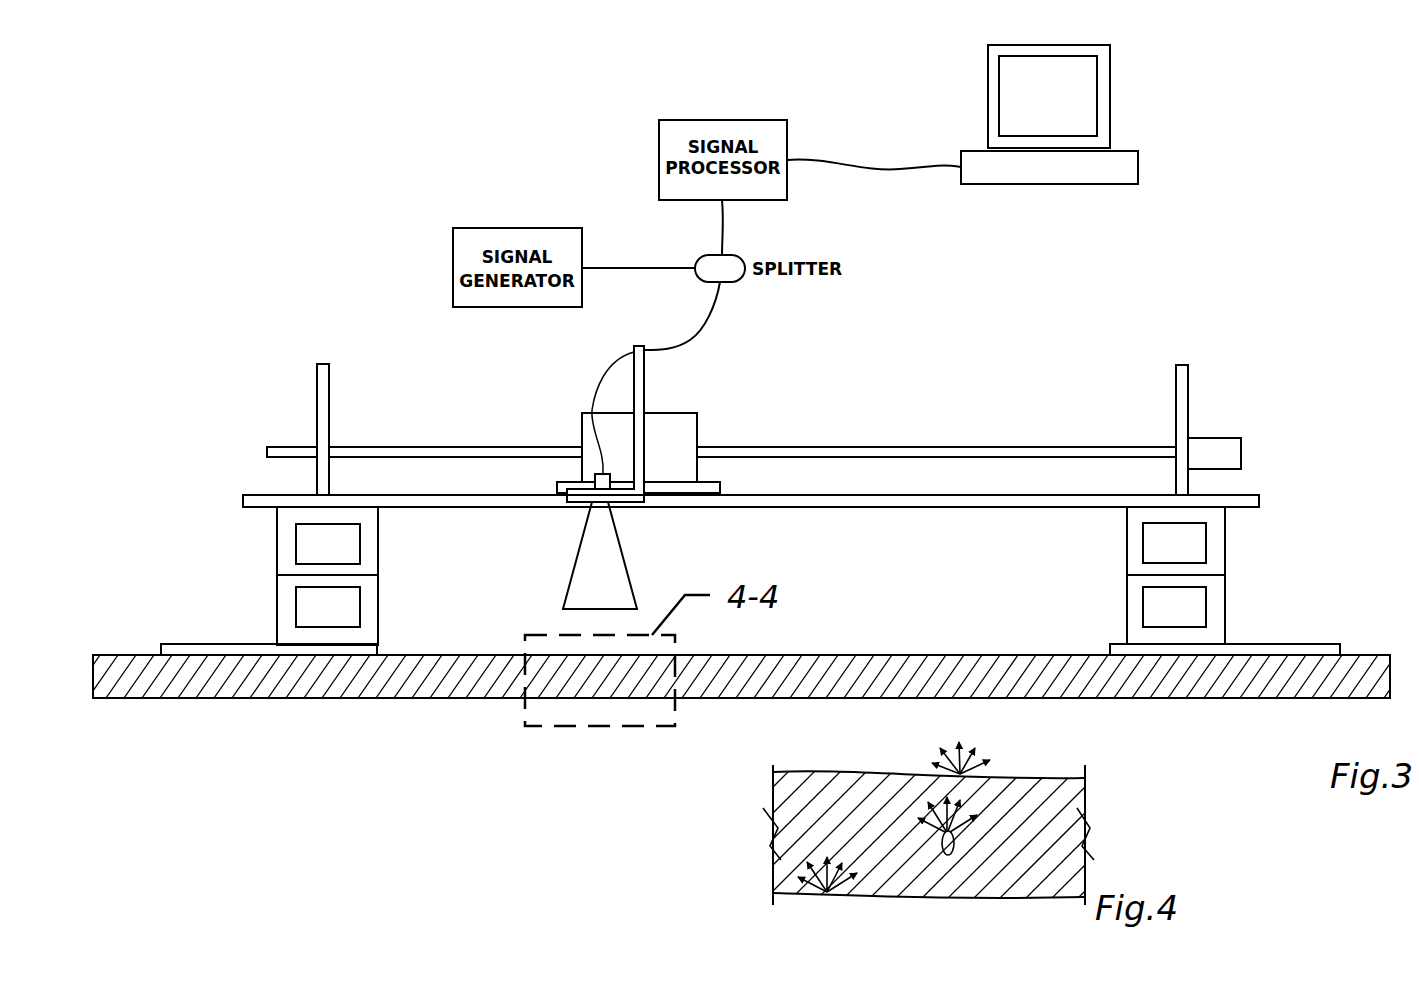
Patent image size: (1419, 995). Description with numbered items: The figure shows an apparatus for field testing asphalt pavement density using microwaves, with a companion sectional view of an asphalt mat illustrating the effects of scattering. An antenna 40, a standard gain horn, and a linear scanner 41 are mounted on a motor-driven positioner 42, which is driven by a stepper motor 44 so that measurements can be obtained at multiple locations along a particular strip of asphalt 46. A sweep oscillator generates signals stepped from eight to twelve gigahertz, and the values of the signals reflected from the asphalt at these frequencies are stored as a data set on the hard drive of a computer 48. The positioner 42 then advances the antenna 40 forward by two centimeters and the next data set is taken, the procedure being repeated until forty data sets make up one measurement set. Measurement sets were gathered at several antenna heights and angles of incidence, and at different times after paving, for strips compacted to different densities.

The antenna 40 is at (596, 560).
The linear scanner 41 is at (679, 413).
The motor-driven positioner 42 is at (842, 447).
The stepper motor 44 is at (1196, 445).
The strip of asphalt 46 is at (884, 663).
The computer 48 is at (1124, 158).